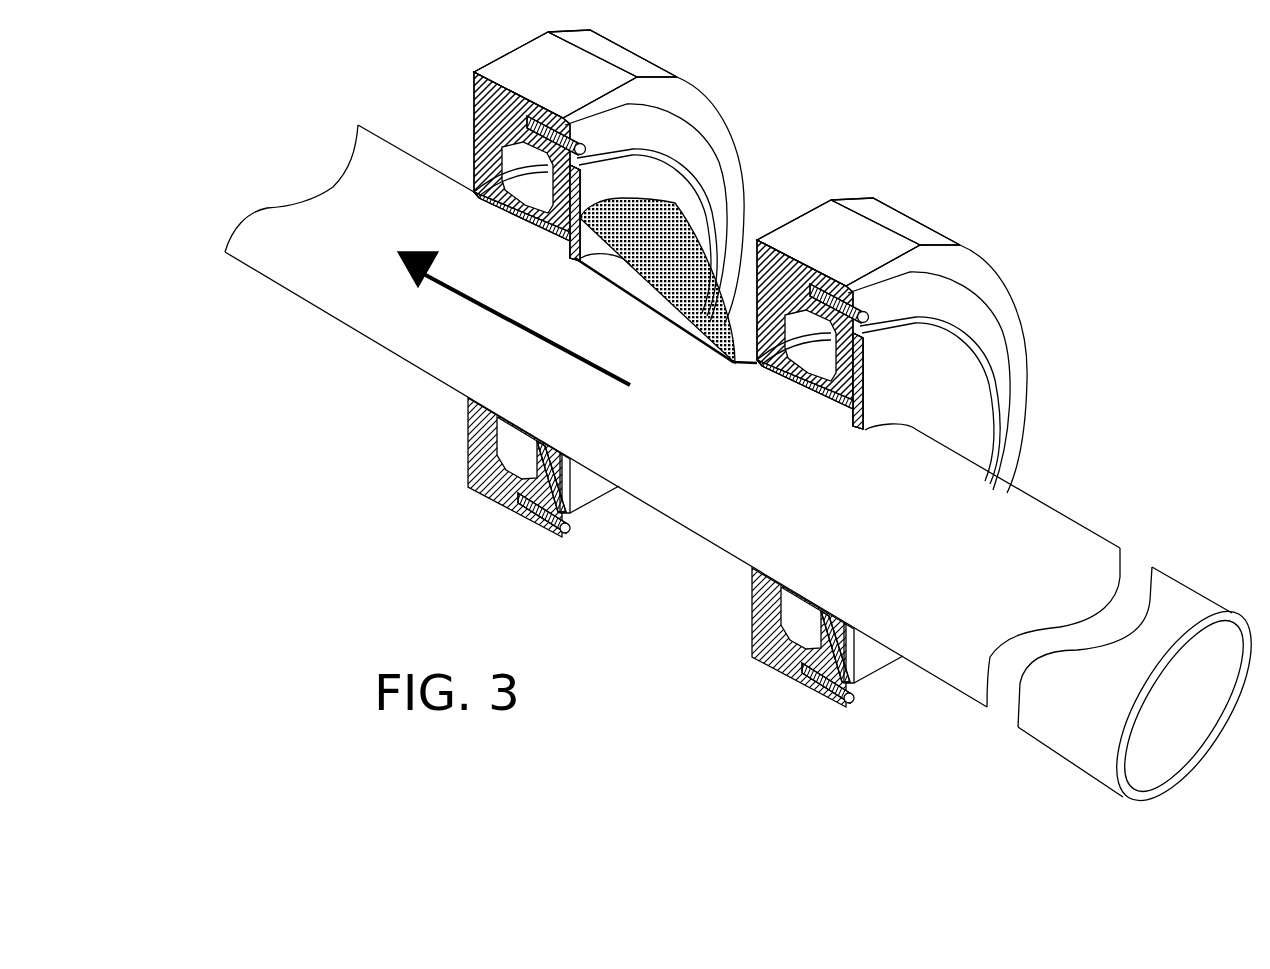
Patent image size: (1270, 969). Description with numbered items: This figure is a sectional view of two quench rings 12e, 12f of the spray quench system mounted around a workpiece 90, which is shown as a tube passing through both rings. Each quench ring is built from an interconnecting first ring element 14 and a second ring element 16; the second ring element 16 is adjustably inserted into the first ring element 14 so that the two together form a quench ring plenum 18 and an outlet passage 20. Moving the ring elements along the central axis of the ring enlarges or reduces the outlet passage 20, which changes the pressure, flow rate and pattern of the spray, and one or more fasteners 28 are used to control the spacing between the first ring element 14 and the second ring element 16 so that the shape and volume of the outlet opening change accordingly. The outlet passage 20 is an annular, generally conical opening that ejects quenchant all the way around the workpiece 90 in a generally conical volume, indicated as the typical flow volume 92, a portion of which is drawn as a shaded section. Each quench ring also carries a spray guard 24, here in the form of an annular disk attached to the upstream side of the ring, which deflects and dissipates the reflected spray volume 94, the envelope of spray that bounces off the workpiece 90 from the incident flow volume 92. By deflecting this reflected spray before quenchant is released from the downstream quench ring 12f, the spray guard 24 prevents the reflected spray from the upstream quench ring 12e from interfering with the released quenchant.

The quench ring 12e is at (1000, 162).
The quench ring 12f is at (795, 54).
The first ring element 14 is at (492, 118).
The second ring element 16 is at (668, 123).
The quench ring plenum 18 is at (527, 163).
The outlet passage 20 is at (473, 193).
The spray guard 24 is at (677, 180).
The fastener 28 is at (580, 147).
The workpiece 90 is at (313, 275).
The flow volume 92 is at (757, 350).
The reflected spray volume 94 is at (673, 253).